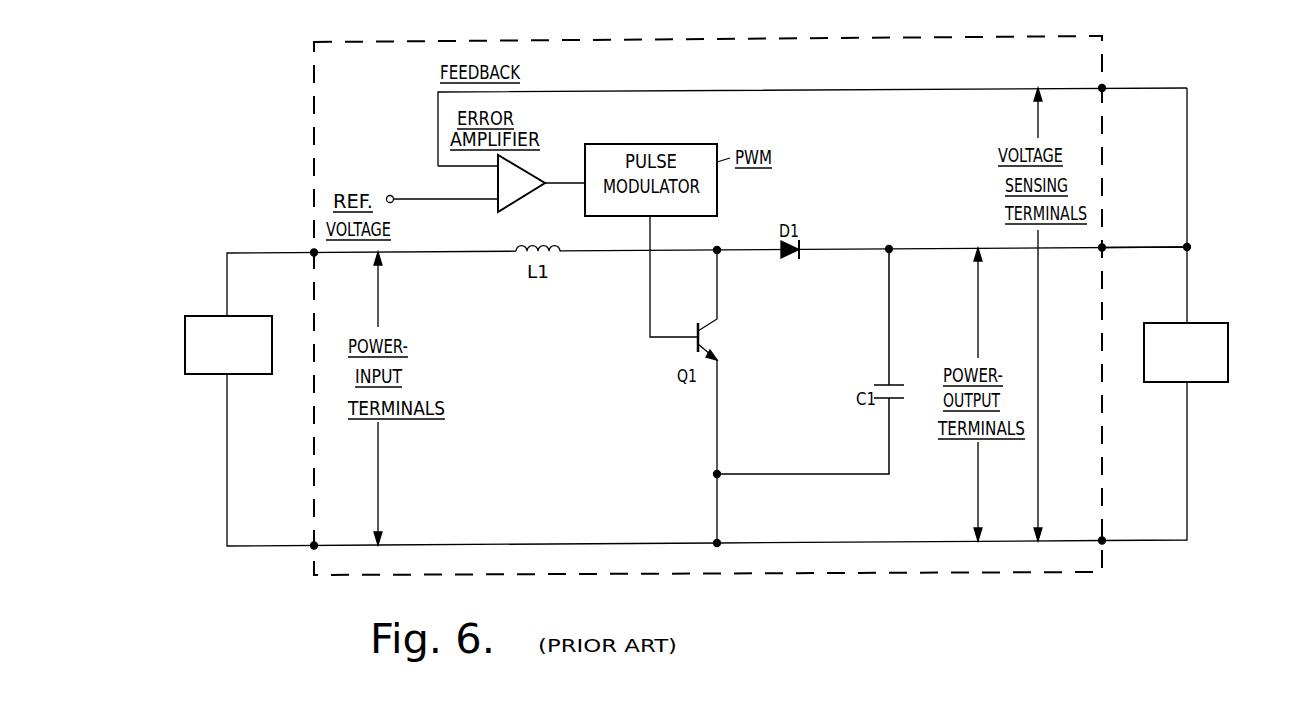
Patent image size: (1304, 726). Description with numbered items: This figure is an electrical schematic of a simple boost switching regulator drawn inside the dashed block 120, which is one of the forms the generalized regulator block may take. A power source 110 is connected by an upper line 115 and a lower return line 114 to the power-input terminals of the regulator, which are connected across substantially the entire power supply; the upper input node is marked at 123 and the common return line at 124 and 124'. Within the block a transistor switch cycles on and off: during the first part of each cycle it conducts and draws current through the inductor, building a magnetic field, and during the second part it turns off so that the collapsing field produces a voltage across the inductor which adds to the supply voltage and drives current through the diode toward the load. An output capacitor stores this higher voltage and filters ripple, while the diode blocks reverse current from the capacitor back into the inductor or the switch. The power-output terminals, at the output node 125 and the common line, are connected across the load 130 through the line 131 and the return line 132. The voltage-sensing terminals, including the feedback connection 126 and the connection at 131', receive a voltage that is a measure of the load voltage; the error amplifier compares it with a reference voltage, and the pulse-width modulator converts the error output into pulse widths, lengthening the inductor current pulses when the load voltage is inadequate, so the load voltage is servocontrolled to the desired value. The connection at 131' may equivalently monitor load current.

The power source 110 is at (208, 375).
The power input line (return) 114 is at (280, 547).
The power input line 115 is at (276, 253).
The dashed block 120 is at (603, 574).
The power input terminal 123 is at (355, 254).
The common return line 124 is at (547, 531).
The common return line node 124' is at (817, 523).
The power output terminal 125 is at (1070, 250).
The voltage sensing terminal 126 is at (837, 88).
The load 130 is at (1228, 345).
The output line to load 131 is at (1163, 282).
The voltage-sensing terminal connection 131' is at (1208, 167).
The return line from load 132 is at (1144, 541).